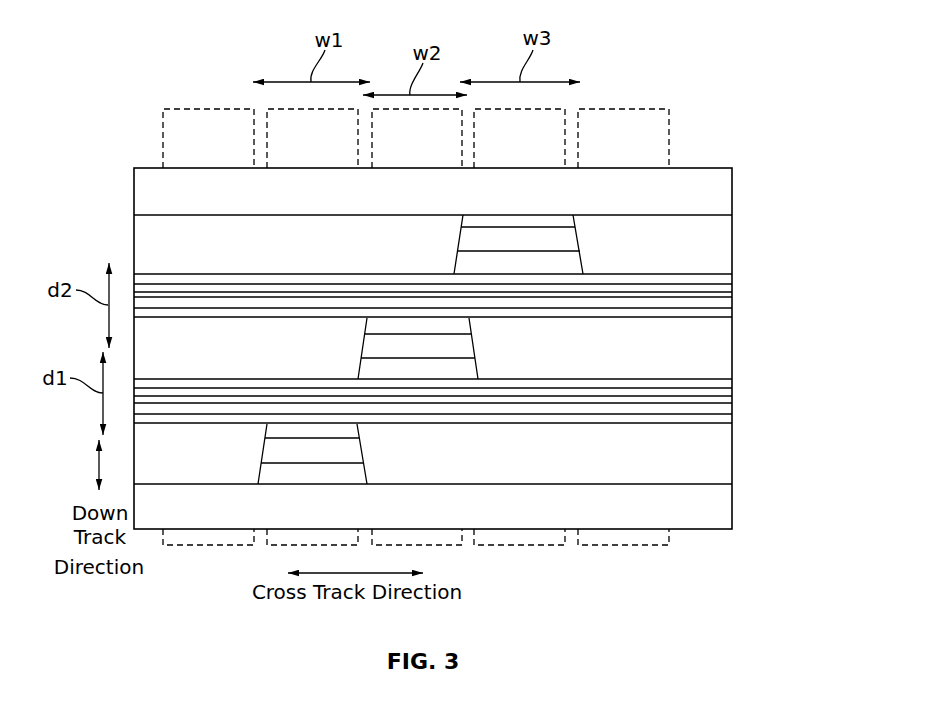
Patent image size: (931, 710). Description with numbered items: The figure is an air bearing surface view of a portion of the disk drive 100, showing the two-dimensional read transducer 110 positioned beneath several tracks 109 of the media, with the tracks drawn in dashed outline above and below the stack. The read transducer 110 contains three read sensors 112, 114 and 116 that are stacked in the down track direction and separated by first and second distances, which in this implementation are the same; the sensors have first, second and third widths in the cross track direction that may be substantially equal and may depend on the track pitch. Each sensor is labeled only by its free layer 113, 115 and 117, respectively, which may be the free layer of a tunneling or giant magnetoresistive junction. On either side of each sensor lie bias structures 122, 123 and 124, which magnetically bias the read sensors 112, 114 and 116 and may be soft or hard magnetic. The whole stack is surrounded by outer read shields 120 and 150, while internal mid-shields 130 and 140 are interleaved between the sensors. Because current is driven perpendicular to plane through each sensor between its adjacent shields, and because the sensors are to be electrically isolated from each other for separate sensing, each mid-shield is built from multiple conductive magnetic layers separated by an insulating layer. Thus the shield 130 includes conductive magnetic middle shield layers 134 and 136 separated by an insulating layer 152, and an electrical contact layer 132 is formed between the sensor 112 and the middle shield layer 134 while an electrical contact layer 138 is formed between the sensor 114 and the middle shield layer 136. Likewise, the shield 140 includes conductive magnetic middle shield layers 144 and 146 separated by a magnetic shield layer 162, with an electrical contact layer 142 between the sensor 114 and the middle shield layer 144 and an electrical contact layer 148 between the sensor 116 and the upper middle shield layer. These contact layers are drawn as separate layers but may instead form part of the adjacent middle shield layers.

The disk drive 100 is at (166, 62).
The read transducer 110 is at (455, 290).
The tracks 109 is at (416, 327).
The read shield 150 is at (433, 203).
The read shield 120 is at (436, 508).
The read sensor 116 is at (537, 212).
The free layer 117 is at (518, 244).
The free layer 115 is at (418, 348).
The free layer 113 is at (312, 454).
The read sensor 114 is at (416, 381).
The read sensor 112 is at (287, 484).
The bias structure 124 is at (433, 248).
The bias structure 123 is at (433, 352).
The bias structure 122 is at (433, 457).
The shield 140 is at (204, 273).
The electrical contact layer 148 is at (655, 277).
The conductive magnetic middle shield layer 146 is at (733, 291).
The magnetic shield layer 162 is at (725, 299).
The conductive magnetic middle shield layer 144 is at (733, 305).
The electrical contact layer 142 is at (733, 315).
The shield 130 is at (685, 428).
The electrical contact layer 138 is at (648, 383).
The conductive magnetic middle shield layer 136 is at (733, 392).
The insulating layer 152 is at (732, 402).
The conductive magnetic middle shield layer 134 is at (733, 410).
The electrical contact layer 132 is at (733, 420).